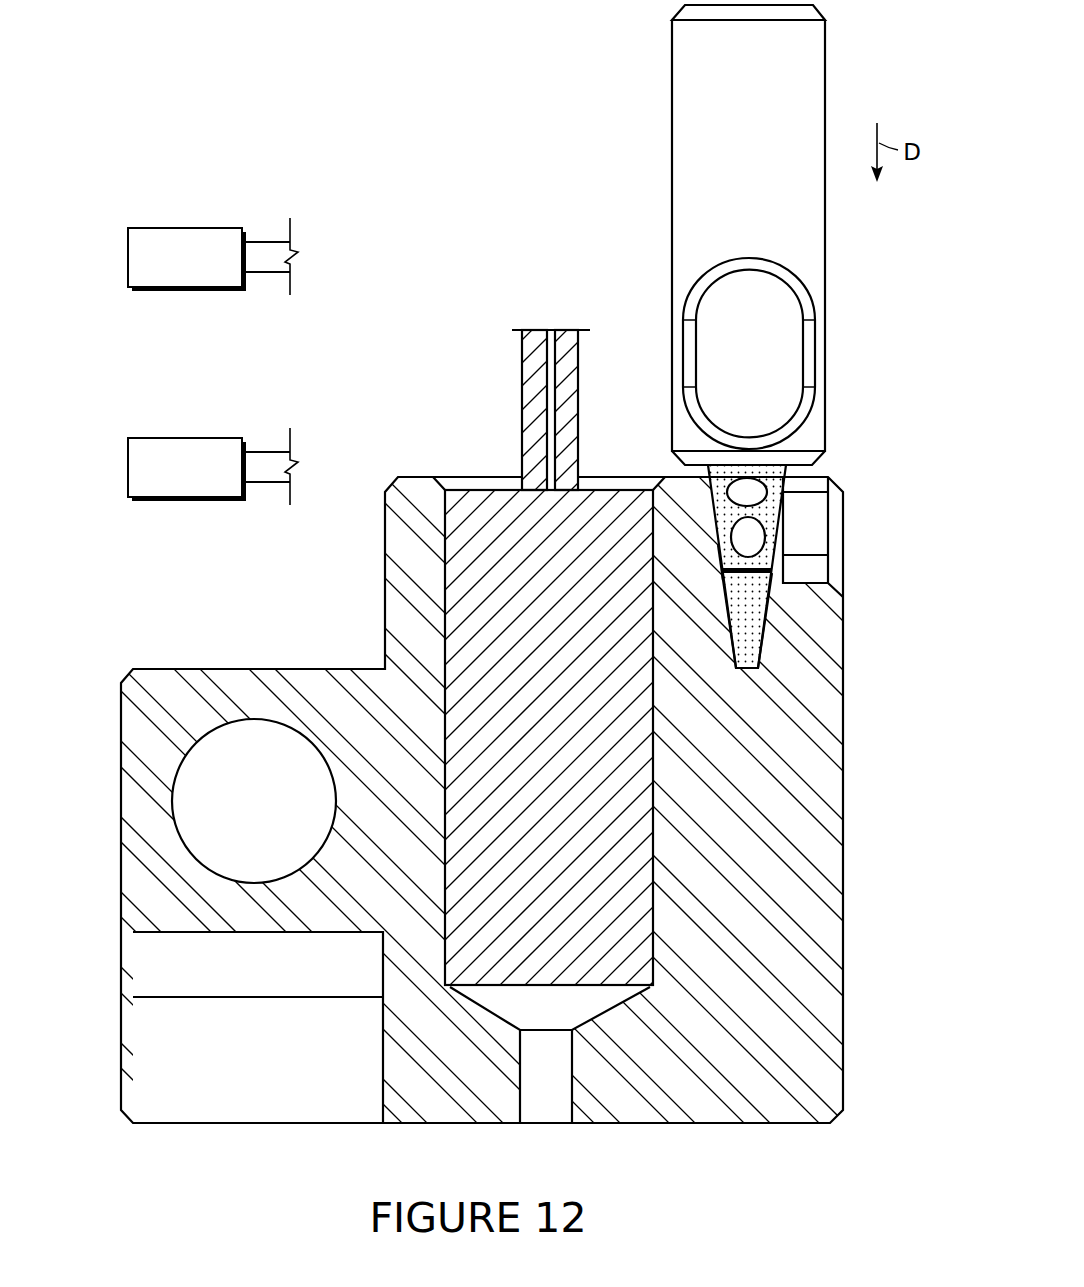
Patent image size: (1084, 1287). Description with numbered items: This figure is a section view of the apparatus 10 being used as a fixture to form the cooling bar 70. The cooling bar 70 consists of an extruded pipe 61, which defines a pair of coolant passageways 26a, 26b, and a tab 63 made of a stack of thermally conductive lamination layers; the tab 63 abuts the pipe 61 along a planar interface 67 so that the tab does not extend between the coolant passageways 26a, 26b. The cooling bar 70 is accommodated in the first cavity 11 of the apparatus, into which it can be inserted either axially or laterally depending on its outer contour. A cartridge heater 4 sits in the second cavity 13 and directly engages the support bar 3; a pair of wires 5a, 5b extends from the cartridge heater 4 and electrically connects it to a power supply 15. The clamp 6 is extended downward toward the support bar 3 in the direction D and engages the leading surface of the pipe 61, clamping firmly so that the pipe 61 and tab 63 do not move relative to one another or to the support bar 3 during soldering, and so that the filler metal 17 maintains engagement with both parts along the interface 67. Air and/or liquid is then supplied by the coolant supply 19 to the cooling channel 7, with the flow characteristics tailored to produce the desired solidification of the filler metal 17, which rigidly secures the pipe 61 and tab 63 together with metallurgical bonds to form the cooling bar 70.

The support bar 3 is at (832, 800).
The cartridge heater 4 is at (460, 653).
The wire 5a is at (522, 408).
The wire 5b is at (578, 405).
The clamp 6 is at (822, 235).
The cooling channel 7 is at (162, 803).
The apparatus 10 is at (858, 418).
The first cavity 11 is at (808, 511).
The second cavity 13 is at (606, 1009).
The power supply 15 is at (128, 258).
The filler metal 17 is at (733, 575).
The coolant supply 19 is at (128, 468).
The coolant passageway 26a is at (737, 537).
The coolant passageway 26b is at (720, 482).
The extruded pipe 61 is at (775, 471).
The tab 63 is at (757, 618).
The planar interface 67 is at (773, 571).
The cooling bar 70 is at (793, 537).